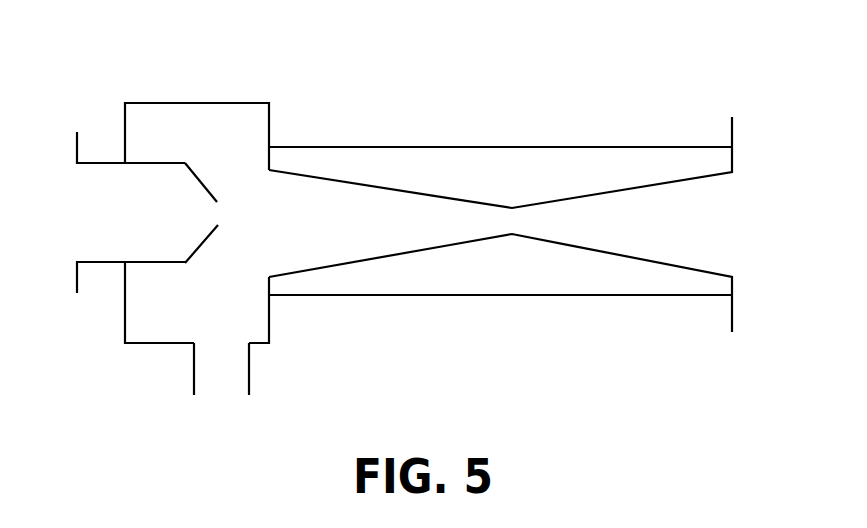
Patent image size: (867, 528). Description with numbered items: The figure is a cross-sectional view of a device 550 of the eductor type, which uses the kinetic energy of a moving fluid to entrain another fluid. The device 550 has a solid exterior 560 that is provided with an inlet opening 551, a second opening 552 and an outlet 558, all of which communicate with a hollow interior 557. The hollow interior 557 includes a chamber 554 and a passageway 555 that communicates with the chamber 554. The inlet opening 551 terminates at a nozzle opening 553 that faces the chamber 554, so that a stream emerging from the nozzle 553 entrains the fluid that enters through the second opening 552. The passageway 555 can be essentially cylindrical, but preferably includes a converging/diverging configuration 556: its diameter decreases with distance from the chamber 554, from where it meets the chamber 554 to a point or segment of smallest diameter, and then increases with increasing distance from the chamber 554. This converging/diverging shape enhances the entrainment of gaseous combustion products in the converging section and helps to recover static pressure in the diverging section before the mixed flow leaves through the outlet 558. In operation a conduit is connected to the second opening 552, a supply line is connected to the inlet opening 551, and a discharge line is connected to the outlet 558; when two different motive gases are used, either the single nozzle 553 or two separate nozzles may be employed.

The device 550 is at (505, 109).
The inlet opening 551 is at (131, 179).
The second opening 552 is at (221, 385).
The nozzle opening 553 is at (220, 212).
The chamber 554 is at (197, 302).
The passageway 555 is at (359, 221).
The converging/diverging configuration 556 is at (510, 221).
The hollow interior 557 is at (142, 317).
The outlet 558 is at (660, 224).
The solid exterior 560 is at (305, 147).